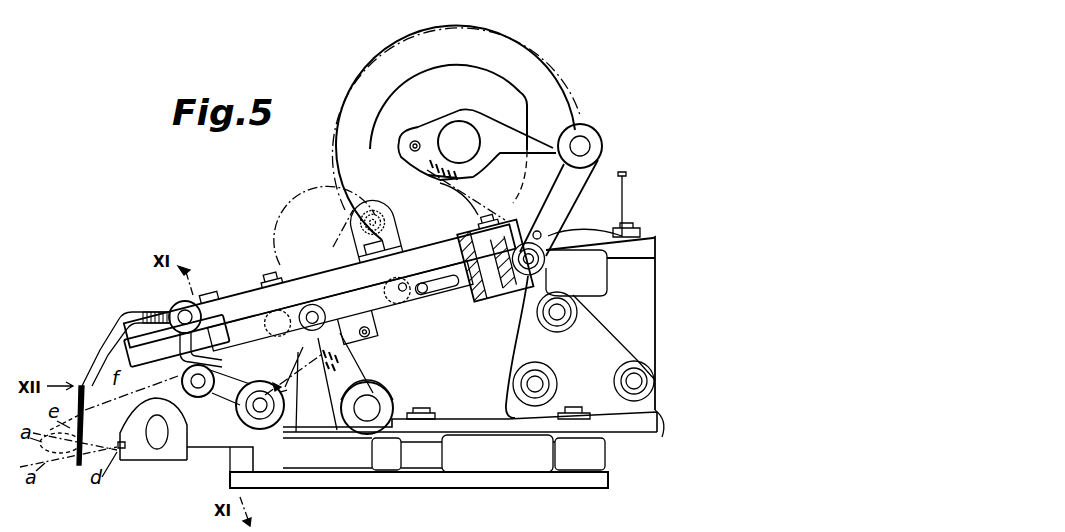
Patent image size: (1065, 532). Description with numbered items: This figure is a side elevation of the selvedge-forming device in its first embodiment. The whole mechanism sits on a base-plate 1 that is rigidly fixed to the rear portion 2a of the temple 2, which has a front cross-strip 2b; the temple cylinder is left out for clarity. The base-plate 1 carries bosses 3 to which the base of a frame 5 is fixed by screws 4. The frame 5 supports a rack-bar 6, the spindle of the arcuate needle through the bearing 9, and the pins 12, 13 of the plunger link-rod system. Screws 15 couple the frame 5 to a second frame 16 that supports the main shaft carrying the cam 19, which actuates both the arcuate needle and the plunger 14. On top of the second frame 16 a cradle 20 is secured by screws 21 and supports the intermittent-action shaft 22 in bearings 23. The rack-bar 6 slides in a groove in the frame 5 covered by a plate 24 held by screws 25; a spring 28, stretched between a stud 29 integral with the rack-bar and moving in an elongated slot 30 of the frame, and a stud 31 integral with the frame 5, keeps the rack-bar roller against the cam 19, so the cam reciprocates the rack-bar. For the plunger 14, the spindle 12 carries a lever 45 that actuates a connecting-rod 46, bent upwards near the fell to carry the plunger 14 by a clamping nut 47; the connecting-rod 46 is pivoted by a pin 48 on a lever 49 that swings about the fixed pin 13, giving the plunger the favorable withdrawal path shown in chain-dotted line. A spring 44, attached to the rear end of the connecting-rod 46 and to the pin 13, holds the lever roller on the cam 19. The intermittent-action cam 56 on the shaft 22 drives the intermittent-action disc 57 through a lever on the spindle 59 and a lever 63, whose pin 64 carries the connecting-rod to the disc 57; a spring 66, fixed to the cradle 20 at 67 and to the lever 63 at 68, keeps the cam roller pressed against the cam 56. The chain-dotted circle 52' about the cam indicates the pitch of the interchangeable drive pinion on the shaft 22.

The base-plate 1 is at (520, 480).
The temple 2 is at (153, 455).
The rear portion of the temple 2a is at (208, 458).
The front cross-strip 2b is at (123, 460).
The bosses 3 is at (425, 463).
The screws 4 is at (425, 410).
The frame 5 is at (478, 390).
The rack-bar 6 is at (157, 345).
The bearing 9 is at (200, 383).
The pin (spindle) 12 is at (367, 410).
The pin 13 is at (260, 407).
The plunger 14 is at (97, 362).
The screws 15 is at (636, 382).
The second frame 16 is at (643, 330).
The cam 19 is at (303, 228).
The cradle 20 is at (606, 183).
The screws 21 is at (634, 227).
The intermittent-action shaft 22 is at (463, 135).
The bearings 23 is at (442, 120).
The plate 24 is at (311, 256).
The screws 25 is at (366, 219).
The spring 28 is at (344, 318).
The stud 29 is at (415, 295).
The elongated slot 30 is at (451, 293).
The stud 31 is at (274, 281).
The spring 44 is at (297, 432).
The lever 45 is at (327, 430).
The connecting-rod 46 is at (198, 260).
The clamping nut 47 is at (173, 303).
The pin 48 is at (197, 383).
The lever 49 is at (213, 378).
The wheel pitch circle 52' is at (456, 117).
The intermittent-action cam 56 is at (392, 100).
The intermittent-action disc 57 is at (344, 215).
The spindle 59 is at (580, 144).
The lever 63 is at (570, 195).
The pin 64 is at (507, 272).
The spring 66 is at (430, 168).
The attachment point on cradle 67 is at (410, 142).
The attachment point on lever 68 is at (541, 234).